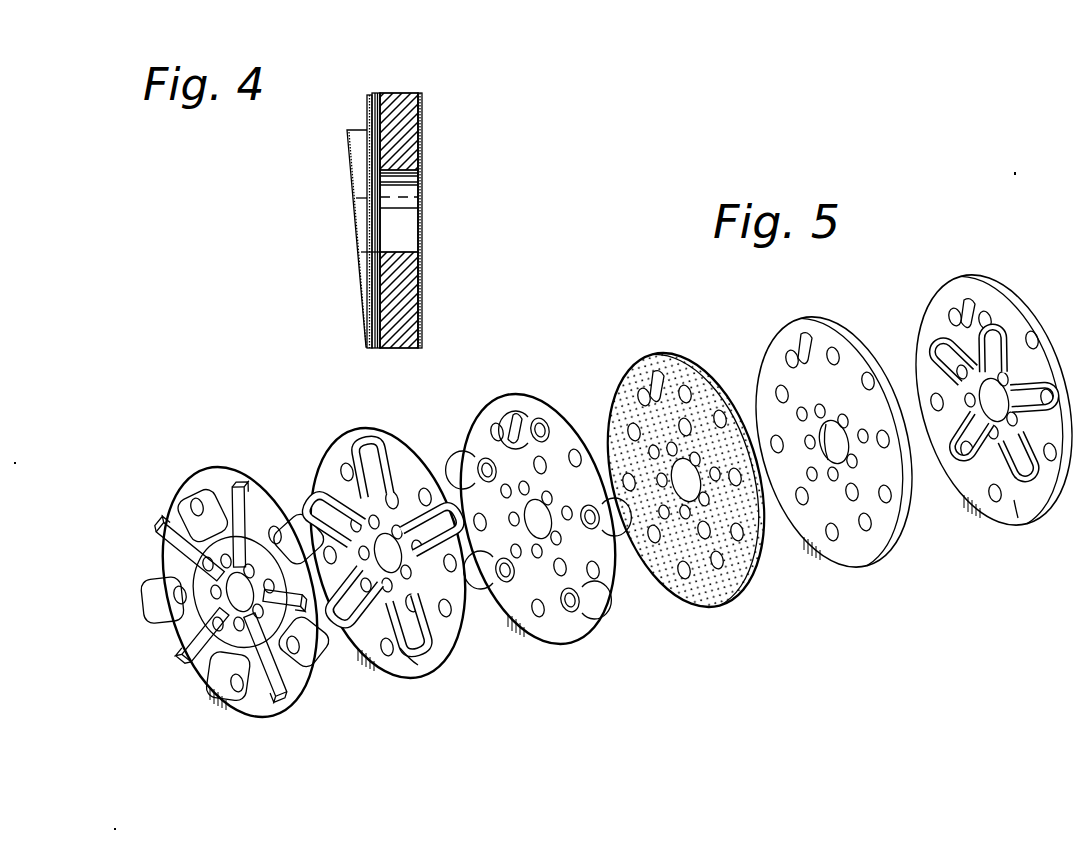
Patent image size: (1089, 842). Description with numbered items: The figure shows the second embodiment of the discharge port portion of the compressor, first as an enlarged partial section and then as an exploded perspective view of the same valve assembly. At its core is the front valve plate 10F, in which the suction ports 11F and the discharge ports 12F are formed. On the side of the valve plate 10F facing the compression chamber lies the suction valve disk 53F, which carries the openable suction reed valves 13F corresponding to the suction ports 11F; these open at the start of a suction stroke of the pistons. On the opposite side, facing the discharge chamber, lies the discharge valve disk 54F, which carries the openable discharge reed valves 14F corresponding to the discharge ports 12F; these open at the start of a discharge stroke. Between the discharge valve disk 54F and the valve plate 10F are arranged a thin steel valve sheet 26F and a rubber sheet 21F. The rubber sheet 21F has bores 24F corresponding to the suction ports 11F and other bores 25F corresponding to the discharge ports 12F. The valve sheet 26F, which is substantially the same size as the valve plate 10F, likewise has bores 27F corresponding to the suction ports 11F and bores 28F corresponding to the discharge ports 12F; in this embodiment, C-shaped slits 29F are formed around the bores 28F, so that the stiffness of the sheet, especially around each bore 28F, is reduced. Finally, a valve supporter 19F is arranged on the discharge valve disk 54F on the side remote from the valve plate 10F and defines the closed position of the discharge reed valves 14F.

In FIG. 4, the valve plate 10F is at (423, 110).
In FIG. 5, the valve plate 10F is at (773, 365).
In FIG. 5, the suction ports 11F is at (821, 427).
In FIG. 4, the discharge ports 12F is at (408, 238).
In FIG. 5, the discharge ports 12F is at (833, 352).
In FIG. 4, the suction reed valves 13F is at (423, 297).
In FIG. 5, the suction reed valves 13F is at (985, 409).
In FIG. 4, the discharge reed valves 14F is at (370, 222).
In FIG. 5, the discharge reed valves 14F is at (387, 477).
In FIG. 4, the valve supporter 19F is at (348, 165).
In FIG. 5, the valve supporter 19F is at (180, 507).
In FIG. 4, the rubber sheet 21F is at (383, 93).
In FIG. 5, the rubber sheet 21F is at (676, 464).
In FIG. 5, the bores 24F is at (683, 425).
In FIG. 4, the bores 25F is at (380, 183).
In FIG. 5, the bores 25F is at (677, 382).
In FIG. 4, the valve sheet 26F is at (372, 93).
In FIG. 5, the valve sheet 26F is at (525, 497).
In FIG. 5, the bores 27F is at (497, 432).
In FIG. 4, the bores 28F is at (377, 207).
In FIG. 5, the bores 28F is at (510, 417).
In FIG. 4, the C-shaped slits 29F is at (380, 145).
In FIG. 5, the C-shaped slits 29F is at (540, 428).
In FIG. 5, the suction valve disk 53F is at (1017, 505).
In FIG. 4, the discharge valve disk 54F is at (370, 273).
In FIG. 5, the discharge valve disk 54F is at (408, 668).